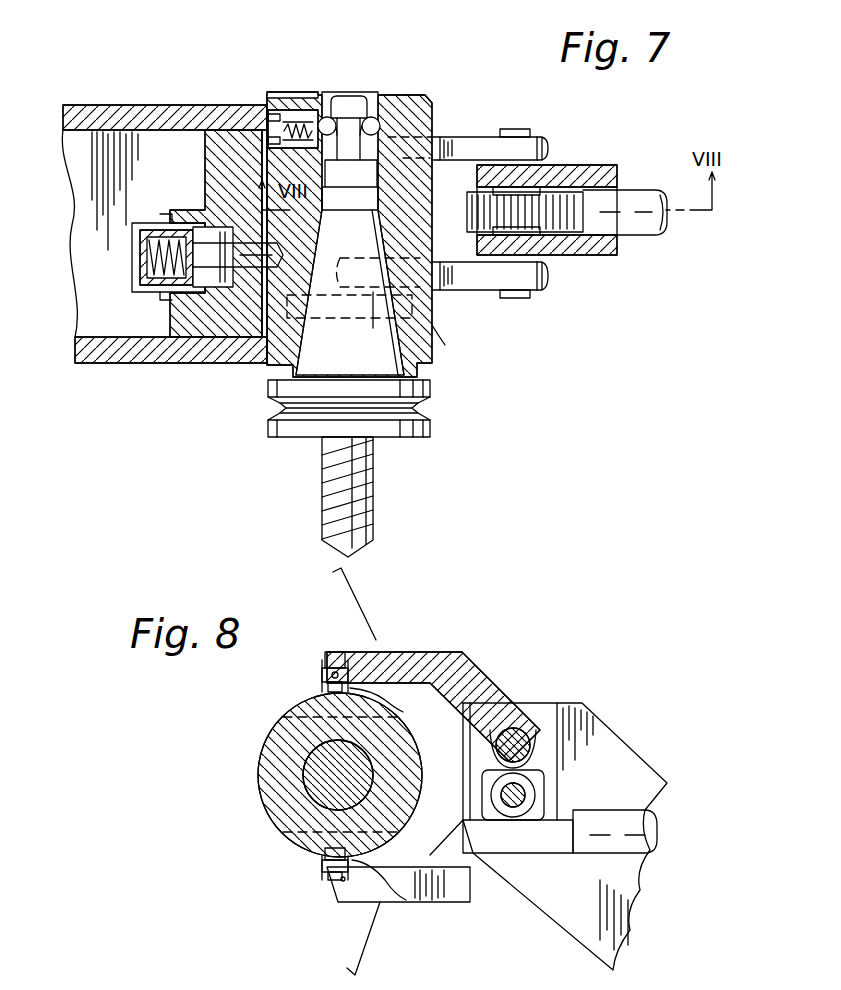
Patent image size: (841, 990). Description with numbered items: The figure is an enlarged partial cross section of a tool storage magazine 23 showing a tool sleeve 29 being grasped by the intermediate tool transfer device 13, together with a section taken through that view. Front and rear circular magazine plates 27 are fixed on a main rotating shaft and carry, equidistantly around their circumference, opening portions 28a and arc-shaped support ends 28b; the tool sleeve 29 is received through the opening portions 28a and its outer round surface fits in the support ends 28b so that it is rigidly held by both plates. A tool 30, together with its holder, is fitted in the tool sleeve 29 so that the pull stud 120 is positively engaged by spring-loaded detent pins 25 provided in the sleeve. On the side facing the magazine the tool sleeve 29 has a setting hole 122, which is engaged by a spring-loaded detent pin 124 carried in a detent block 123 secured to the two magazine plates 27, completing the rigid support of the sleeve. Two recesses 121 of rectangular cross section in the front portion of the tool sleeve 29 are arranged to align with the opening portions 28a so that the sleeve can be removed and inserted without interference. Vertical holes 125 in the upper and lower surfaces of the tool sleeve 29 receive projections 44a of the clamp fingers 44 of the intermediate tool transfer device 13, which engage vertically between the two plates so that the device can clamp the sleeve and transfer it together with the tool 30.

In FIG. 7, the tool storage magazine 23 is at (114, 86).
In FIG. 7, the detent block 123 is at (141, 112).
In FIG. 7, the spring-loaded detent pin 124 is at (253, 243).
In FIG. 7, the setting hole 122 is at (231, 352).
In FIG. 7, the tool sleeve 29 is at (423, 95).
In FIG. 8, the tool sleeve 29 is at (265, 778).
In FIG. 7, the support end 28b is at (268, 103).
In FIG. 8, the support end 28b is at (259, 752).
In FIG. 7, the pull stud 120 is at (353, 110).
In FIG. 7, the spring-loaded detent pin 25 is at (320, 118).
In FIG. 7, the clamp finger 44 is at (470, 150).
In FIG. 8, the clamp finger 44 is at (478, 680).
In FIG. 7, the intermediate tool transfer device 13 is at (620, 149).
In FIG. 8, the intermediate tool transfer device 13 is at (618, 738).
In FIG. 7, the recess 121 is at (457, 346).
In FIG. 8, the recess 121 is at (300, 705).
In FIG. 7, the circular magazine plate 27 is at (160, 363).
In FIG. 7, the tool 30 is at (298, 430).
In FIG. 8, the projection 44a is at (322, 667).
In FIG. 8, the vertical hole 125 is at (320, 695).
In FIG. 8, the opening portion 28a is at (421, 908).